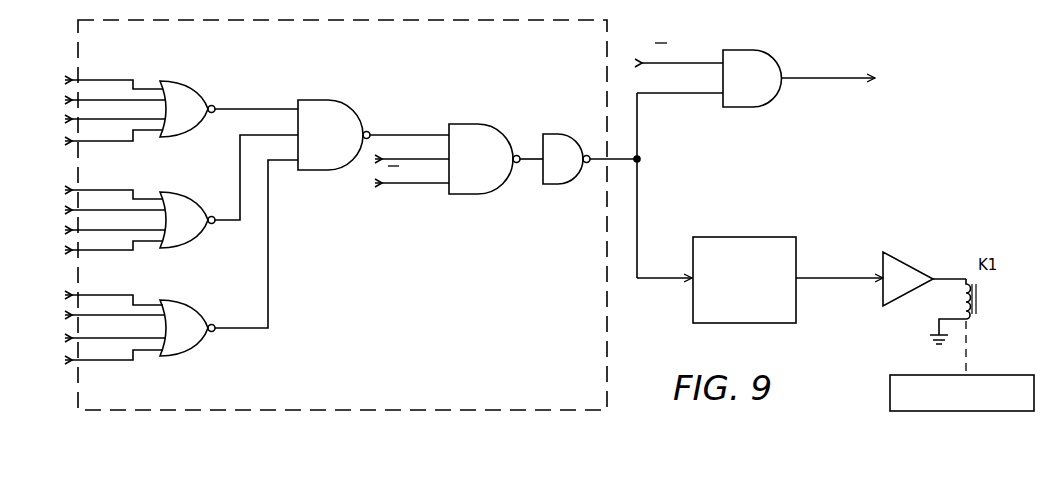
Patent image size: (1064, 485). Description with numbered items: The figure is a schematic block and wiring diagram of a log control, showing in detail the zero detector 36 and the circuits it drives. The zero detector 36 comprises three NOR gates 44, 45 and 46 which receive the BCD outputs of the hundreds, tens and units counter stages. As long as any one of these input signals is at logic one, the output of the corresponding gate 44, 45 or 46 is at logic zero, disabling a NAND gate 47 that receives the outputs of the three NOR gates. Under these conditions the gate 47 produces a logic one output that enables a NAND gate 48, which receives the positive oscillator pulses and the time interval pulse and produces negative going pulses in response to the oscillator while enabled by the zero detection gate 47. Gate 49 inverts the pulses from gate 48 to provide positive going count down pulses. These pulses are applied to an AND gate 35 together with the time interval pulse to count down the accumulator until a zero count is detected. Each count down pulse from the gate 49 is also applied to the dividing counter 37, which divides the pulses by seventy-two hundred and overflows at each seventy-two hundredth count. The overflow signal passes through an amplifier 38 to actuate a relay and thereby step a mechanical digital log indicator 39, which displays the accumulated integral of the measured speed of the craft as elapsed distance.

The AND gate 35 is at (764, 101).
The zero detector 36 is at (513, 369).
The counter 37 is at (749, 238).
The amplifier 38 is at (906, 268).
The digital log indicator 39 is at (997, 375).
The NOR gate 44 is at (193, 97).
The NOR gate 45 is at (193, 209).
The NOR gate 46 is at (197, 318).
The NAND gate 47 is at (350, 109).
The NAND gate 48 is at (472, 126).
The gate 49 is at (565, 135).